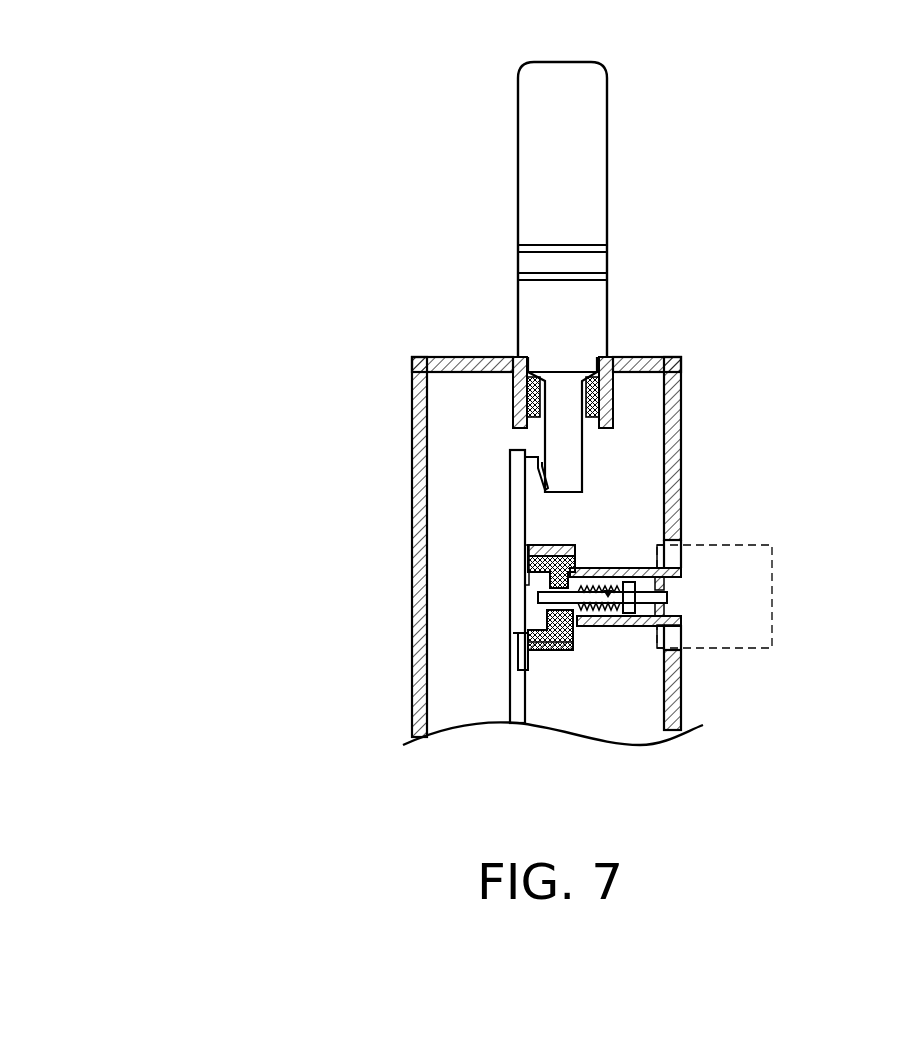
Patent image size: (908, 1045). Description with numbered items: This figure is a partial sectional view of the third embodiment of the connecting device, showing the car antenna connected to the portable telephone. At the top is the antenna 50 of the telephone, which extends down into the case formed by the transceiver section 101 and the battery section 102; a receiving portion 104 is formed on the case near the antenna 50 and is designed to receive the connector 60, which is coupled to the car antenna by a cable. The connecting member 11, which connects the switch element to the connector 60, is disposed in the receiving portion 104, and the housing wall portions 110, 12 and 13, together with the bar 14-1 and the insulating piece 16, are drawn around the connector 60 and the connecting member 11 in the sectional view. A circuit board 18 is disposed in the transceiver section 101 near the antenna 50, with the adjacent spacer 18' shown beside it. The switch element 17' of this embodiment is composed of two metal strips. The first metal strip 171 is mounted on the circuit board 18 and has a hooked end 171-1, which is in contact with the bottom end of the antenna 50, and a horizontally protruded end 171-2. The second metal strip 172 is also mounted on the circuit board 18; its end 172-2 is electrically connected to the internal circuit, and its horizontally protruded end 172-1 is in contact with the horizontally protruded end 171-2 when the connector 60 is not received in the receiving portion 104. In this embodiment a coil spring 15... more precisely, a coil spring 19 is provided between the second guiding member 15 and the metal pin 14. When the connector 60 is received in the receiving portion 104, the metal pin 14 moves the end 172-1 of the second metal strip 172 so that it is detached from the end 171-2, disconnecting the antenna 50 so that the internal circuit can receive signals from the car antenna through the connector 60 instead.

The antenna 50 is at (520, 66).
The transceiver section 101 is at (410, 355).
The battery section 102 is at (683, 355).
The housing lower wall 110 is at (683, 712).
The connecting member 11 is at (681, 697).
The receiving portion 104 is at (683, 643).
The connector 60 is at (771, 542).
The switch element 17' is at (356, 587).
The first metal strip 171 is at (508, 478).
The hooked end 171-1 is at (540, 460).
The horizontally protruded end 171-2 is at (545, 545).
The second metal strip 172 is at (515, 647).
The horizontally protruded end 172-1 is at (527, 578).
The end of second metal strip 172-2 is at (530, 653).
The insulating piece 16 is at (560, 553).
The circuit board 18 is at (436, 675).
The spacer 18' is at (441, 611).
The metal pin 14 is at (620, 567).
The lower bracket bar 14-1 is at (683, 598).
The bracket 13 is at (664, 588).
The bracket portion 12 is at (683, 622).
The coil spring 19 is at (637, 635).
The second guiding member 15 is at (582, 637).